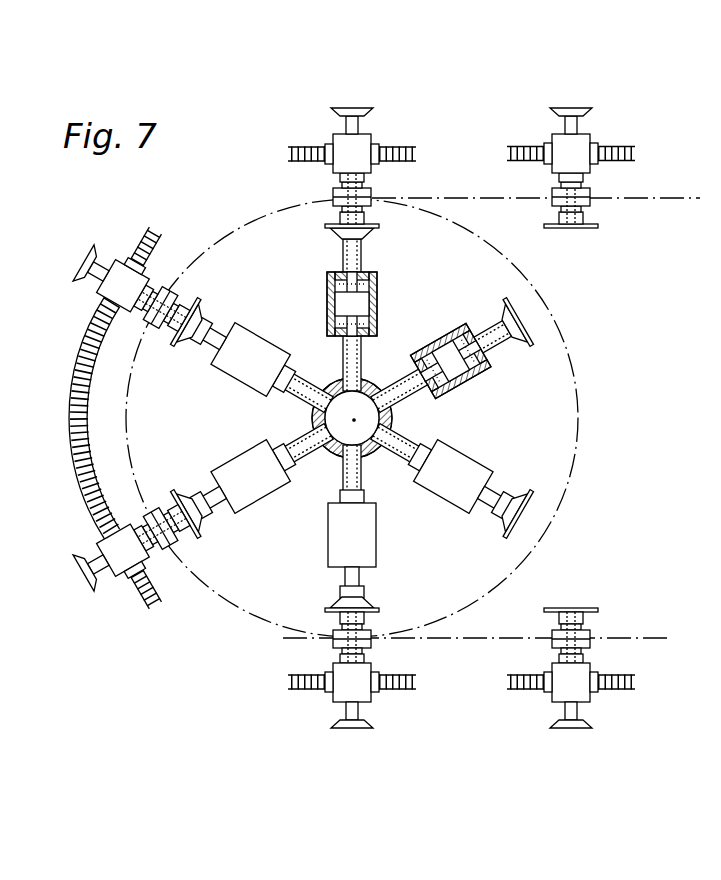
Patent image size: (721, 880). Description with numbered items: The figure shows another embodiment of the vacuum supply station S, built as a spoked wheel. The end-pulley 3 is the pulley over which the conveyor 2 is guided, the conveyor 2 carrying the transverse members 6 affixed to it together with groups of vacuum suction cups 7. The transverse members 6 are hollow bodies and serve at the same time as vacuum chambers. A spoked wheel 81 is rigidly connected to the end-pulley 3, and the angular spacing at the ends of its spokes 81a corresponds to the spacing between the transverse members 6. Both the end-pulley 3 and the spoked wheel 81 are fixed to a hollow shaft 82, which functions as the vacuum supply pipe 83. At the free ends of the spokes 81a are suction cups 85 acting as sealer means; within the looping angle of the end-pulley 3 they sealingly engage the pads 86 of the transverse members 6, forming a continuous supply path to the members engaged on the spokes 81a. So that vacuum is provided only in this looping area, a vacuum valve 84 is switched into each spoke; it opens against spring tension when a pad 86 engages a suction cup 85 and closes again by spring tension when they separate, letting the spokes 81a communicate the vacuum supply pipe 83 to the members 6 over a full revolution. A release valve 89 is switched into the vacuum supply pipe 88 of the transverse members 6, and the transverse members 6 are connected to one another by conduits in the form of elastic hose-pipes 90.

The conveyor 2 is at (508, 200).
The end-pulley 3 is at (578, 418).
The transverse member 6 is at (580, 143).
The vacuum suction cups 7 is at (580, 106).
The spoked wheel 81 is at (297, 437).
The spoke 81a is at (417, 450).
The hollow shaft 82 is at (370, 382).
The vacuum supply pipe 83 is at (347, 430).
The vacuum valve 84 is at (378, 273).
The suction cup 85 is at (528, 333).
The pad 86 is at (589, 229).
The vacuum supply pipe of the transverse members 88 is at (591, 191).
The release valve 89 is at (592, 206).
The elastic hose-pipe 90 is at (395, 152).
The vacuum supply station S is at (412, 392).